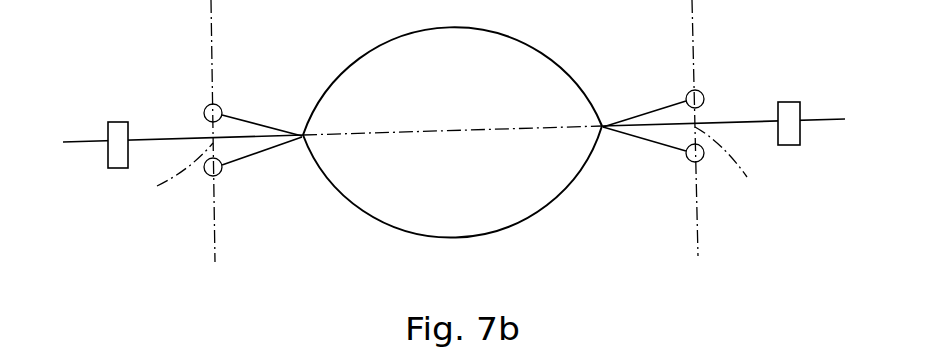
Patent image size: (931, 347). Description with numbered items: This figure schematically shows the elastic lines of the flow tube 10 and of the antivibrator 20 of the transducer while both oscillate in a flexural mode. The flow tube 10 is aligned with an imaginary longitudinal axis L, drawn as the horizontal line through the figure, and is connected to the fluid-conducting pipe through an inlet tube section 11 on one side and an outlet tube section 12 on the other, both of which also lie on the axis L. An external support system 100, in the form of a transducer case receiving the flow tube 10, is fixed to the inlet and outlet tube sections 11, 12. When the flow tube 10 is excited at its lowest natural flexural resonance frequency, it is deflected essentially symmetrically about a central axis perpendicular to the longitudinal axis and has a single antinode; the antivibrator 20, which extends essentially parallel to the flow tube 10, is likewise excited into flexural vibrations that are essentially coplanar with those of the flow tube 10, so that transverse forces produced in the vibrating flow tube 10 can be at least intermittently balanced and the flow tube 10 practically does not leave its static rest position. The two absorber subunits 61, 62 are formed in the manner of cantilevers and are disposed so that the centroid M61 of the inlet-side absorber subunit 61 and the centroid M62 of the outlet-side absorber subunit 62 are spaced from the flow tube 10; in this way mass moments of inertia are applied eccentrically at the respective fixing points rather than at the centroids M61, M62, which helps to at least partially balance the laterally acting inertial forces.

The flow tube 10 is at (348, 50).
The antivibrator 20 is at (563, 201).
The external support system 100 is at (116, 132).
The inlet tube section 11 is at (172, 130).
The outlet tube section 12 is at (730, 110).
The inlet-side absorber subunit 61 is at (228, 176).
The outlet-side absorber subunit 62 is at (683, 167).
The longitudinal axis L is at (70, 133).
The centroid of the inlet-side absorber subunit M61 is at (176, 182).
The centroid of the outlet-side absorber subunit M62 is at (730, 167).